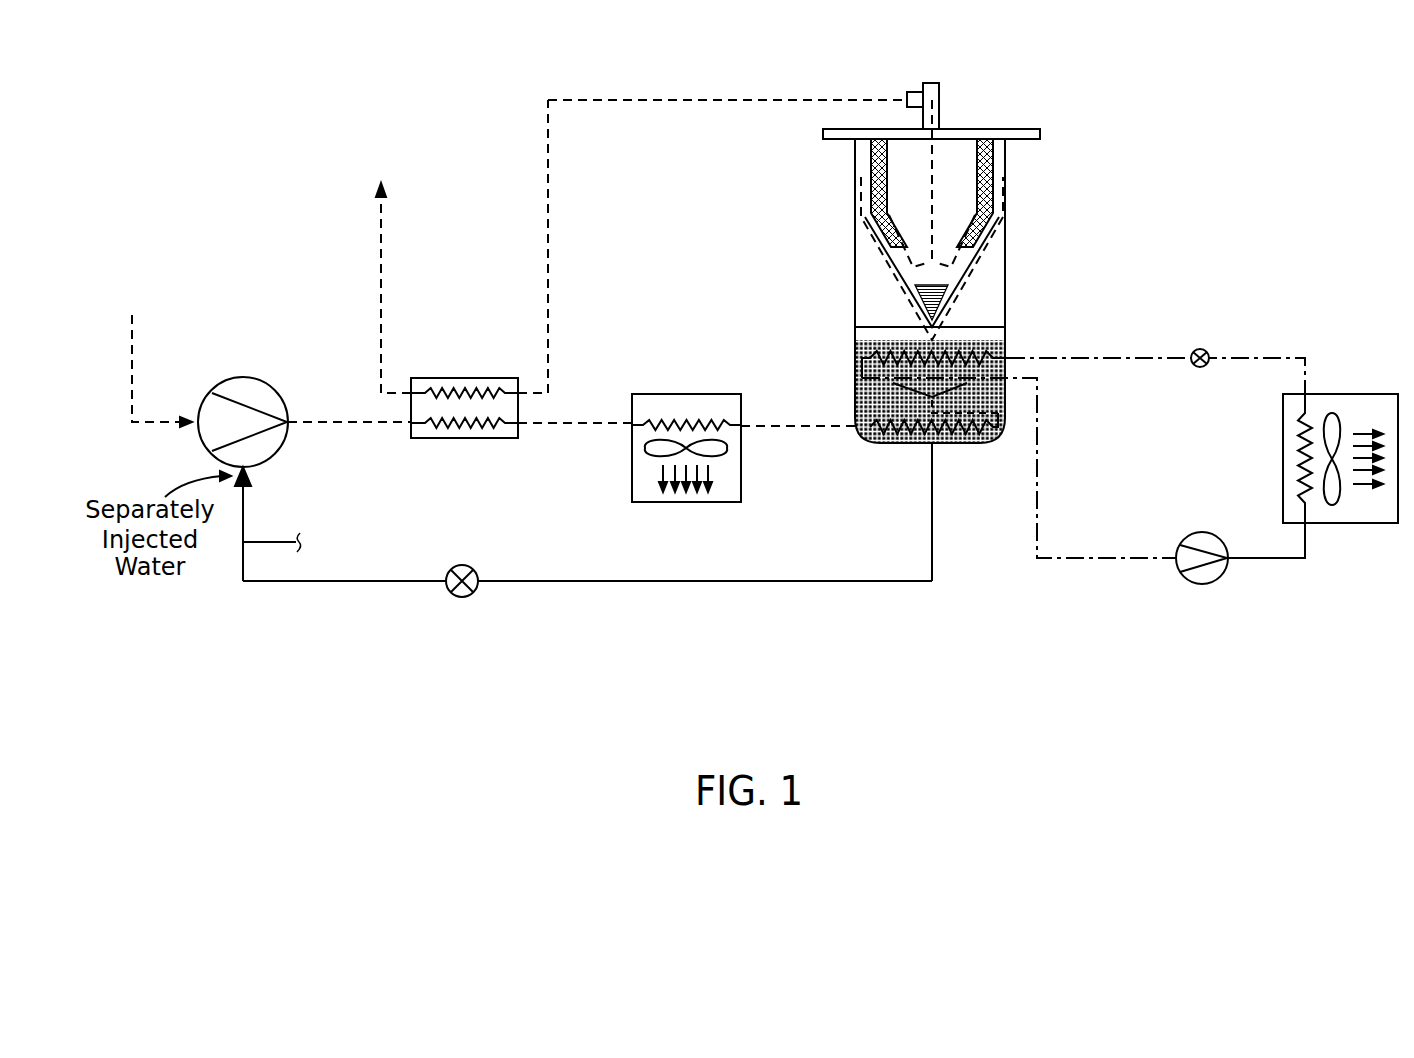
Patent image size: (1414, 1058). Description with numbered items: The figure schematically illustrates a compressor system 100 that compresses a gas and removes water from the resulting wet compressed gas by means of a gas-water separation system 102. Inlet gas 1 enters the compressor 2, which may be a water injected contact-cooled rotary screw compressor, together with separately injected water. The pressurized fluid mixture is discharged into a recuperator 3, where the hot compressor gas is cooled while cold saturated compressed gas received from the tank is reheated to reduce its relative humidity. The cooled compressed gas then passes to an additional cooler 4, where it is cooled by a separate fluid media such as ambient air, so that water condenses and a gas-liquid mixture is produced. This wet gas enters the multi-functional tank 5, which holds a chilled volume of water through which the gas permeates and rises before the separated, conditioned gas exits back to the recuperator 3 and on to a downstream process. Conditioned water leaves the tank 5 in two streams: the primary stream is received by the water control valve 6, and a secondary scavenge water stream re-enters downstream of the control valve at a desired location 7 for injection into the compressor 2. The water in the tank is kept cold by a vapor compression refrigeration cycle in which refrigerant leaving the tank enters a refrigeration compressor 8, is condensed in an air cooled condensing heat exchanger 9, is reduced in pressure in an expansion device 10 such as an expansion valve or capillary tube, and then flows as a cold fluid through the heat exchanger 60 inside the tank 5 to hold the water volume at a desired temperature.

The compressor system 100 is at (216, 98).
The gas-water separation system 102 is at (1042, 94).
The inlet gas 1 is at (158, 355).
The compressor 2 is at (304, 464).
The recuperator 3 is at (504, 269).
The additional cooler 4 is at (743, 433).
The multi-functional tank 5 is at (1007, 304).
The heat exchanger 60 is at (1000, 342).
The expansion device 10 is at (1156, 364).
The condensing heat exchanger 9 is at (1313, 460).
The refrigeration compressor 8 is at (1202, 576).
The desired location 7 is at (334, 528).
The water control valve 6 is at (587, 596).